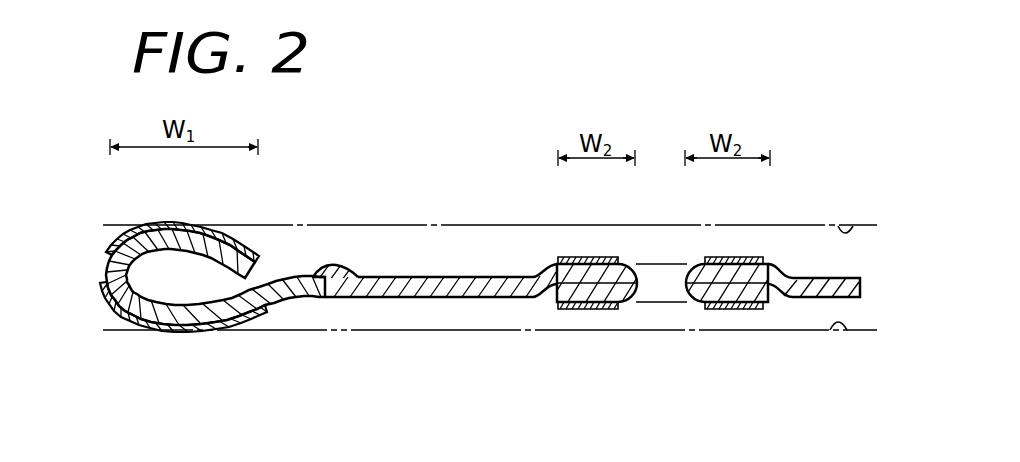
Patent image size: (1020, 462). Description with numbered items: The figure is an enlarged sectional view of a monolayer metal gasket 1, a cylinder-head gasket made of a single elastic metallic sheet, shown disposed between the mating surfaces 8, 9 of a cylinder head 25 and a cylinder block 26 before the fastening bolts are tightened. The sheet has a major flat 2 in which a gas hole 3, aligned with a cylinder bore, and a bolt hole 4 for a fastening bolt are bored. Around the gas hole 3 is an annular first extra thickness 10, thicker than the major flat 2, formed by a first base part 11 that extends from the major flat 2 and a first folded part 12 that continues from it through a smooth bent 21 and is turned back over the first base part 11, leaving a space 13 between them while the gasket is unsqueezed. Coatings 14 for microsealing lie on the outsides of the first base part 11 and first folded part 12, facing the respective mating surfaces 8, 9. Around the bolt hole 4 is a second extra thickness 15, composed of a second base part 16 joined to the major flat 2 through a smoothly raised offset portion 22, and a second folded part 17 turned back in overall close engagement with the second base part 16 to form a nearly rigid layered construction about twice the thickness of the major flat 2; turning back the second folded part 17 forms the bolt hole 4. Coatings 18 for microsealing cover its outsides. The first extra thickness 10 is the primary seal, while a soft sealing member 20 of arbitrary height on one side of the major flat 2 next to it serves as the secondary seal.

The monolayer metal gasket 1 is at (461, 213).
The major flat 2 is at (436, 285).
The gas hole 3 is at (107, 269).
The bolt hole 4 is at (660, 280).
The mating surface 8 is at (857, 225).
The mating surface 9 is at (847, 336).
The first extra thickness 10 is at (171, 341).
The first base part 11 is at (197, 323).
The first folded part 12 is at (208, 252).
The space 13 is at (170, 276).
The coating 14 is at (146, 233).
The second extra thickness 15 is at (657, 350).
The second base part 16 is at (579, 268).
The second folded part 17 is at (570, 307).
The coating 18 is at (604, 257).
The soft sealing member 20 is at (339, 270).
The smooth bent 21 is at (290, 309).
The offset portion 22 is at (546, 276).
The cylinder head 25 is at (361, 211).
The cylinder block 26 is at (368, 386).